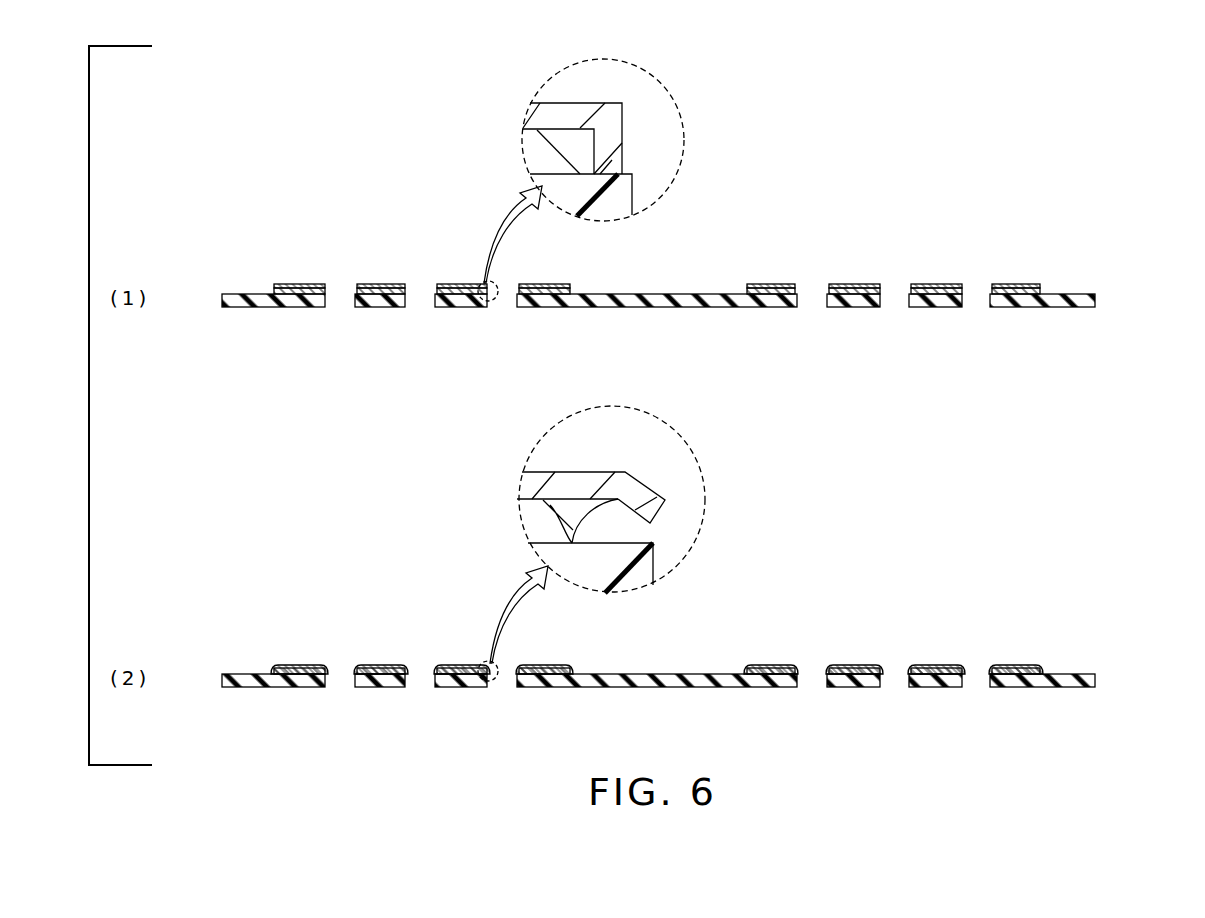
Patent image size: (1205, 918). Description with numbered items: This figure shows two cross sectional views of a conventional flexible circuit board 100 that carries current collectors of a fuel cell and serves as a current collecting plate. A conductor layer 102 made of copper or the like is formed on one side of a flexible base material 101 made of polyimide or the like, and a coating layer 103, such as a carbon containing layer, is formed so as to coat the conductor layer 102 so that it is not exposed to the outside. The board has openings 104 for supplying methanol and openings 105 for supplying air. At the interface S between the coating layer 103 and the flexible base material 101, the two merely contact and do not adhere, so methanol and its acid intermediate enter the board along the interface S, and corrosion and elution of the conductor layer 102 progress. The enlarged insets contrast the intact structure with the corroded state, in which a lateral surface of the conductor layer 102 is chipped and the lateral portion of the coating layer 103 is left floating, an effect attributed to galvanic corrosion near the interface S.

The flexible circuit board 100 is at (1005, 135).
The flexible base material 101 is at (1095, 300).
The conductor layer 102 is at (300, 297).
The coating layer 103 is at (300, 284).
The openings 104 is at (340, 310).
The openings 105 is at (812, 310).
The interface S is at (622, 157).